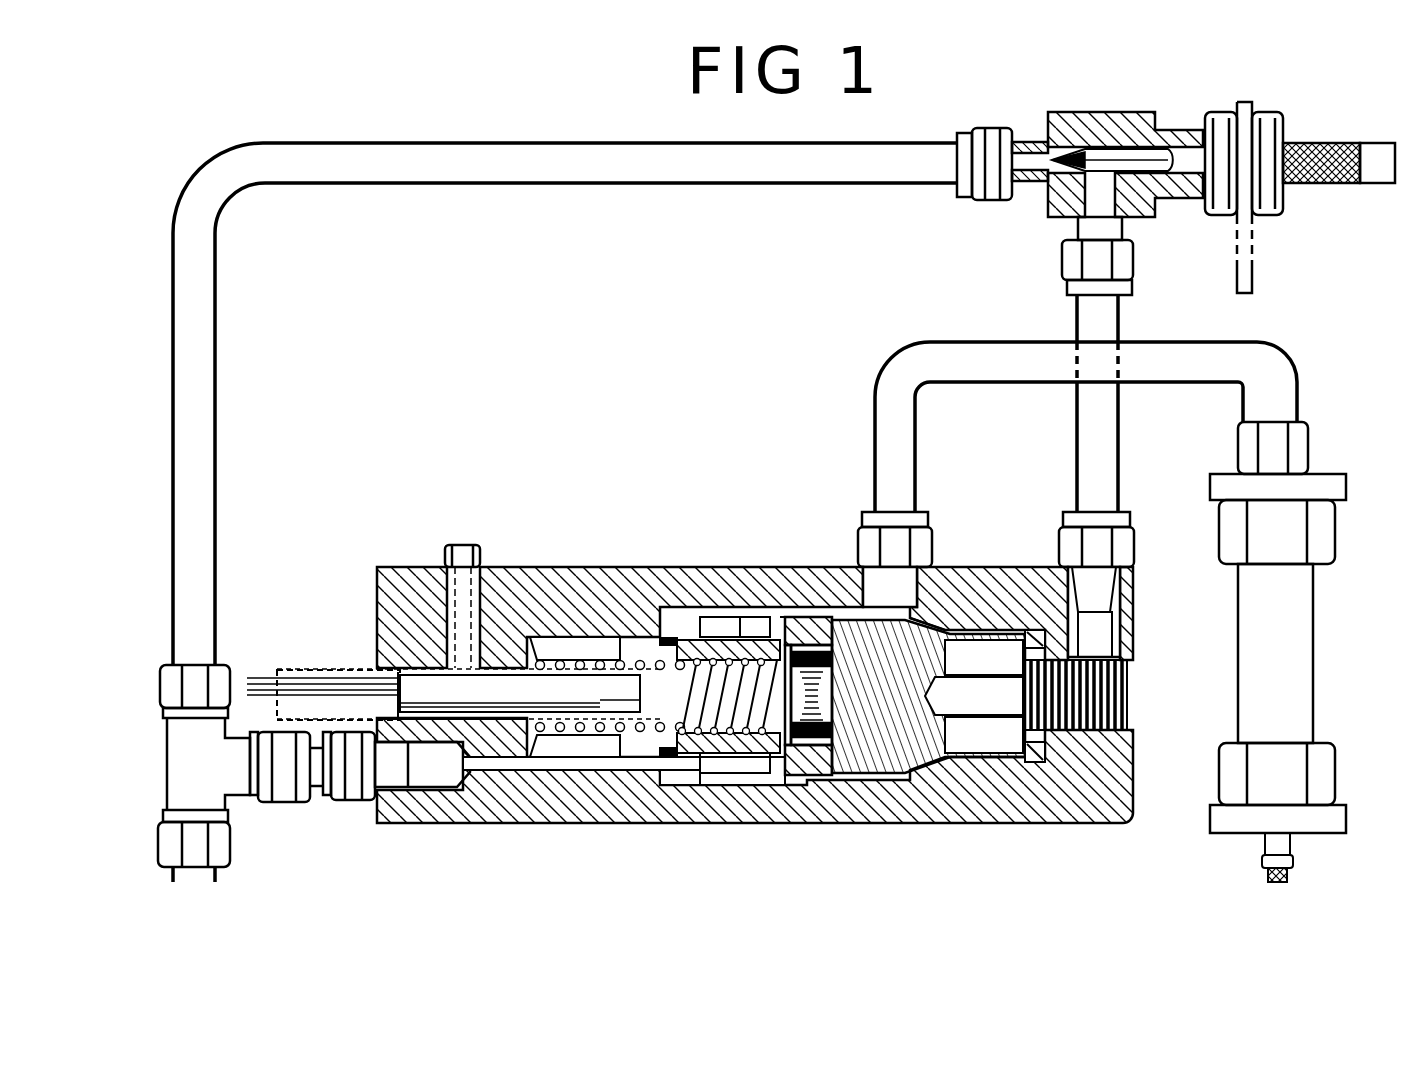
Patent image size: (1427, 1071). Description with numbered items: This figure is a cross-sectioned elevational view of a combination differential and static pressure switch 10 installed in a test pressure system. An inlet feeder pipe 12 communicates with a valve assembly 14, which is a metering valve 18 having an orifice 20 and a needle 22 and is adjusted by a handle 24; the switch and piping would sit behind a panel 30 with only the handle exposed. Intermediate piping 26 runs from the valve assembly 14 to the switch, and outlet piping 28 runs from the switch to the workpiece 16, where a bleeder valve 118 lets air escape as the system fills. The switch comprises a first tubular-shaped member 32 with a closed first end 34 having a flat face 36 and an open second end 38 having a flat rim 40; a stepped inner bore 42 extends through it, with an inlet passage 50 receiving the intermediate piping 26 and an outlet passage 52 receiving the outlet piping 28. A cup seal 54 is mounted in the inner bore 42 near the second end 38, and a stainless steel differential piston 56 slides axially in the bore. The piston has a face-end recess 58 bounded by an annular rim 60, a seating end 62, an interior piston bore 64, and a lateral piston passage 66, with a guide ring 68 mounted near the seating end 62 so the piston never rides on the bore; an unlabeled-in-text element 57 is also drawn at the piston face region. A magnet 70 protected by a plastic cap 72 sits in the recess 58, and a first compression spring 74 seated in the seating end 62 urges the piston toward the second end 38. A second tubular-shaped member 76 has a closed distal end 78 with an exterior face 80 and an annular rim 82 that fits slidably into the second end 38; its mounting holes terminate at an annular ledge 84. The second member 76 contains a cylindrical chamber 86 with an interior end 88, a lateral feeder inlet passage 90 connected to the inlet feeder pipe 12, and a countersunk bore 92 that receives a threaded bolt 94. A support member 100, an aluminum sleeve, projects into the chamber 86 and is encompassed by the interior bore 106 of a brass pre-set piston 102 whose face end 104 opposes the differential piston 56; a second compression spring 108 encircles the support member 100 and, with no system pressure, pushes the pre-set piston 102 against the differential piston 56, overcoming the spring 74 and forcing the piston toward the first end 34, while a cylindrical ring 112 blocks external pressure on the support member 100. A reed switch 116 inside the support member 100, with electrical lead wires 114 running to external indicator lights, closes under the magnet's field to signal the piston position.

The pressure switch 10 is at (566, 424).
The inlet feeder pipe 12 is at (218, 541).
The valve assembly 14 is at (1308, 212).
The workpiece 16 is at (1316, 672).
The metering valve 18 is at (1170, 128).
The orifice 20 is at (1045, 162).
The needle 22 is at (1115, 143).
The handle 24 is at (1286, 120).
The intermediate piping 26 is at (1078, 318).
The outlet piping 28 is at (1300, 388).
The panel 30 is at (1250, 272).
The first tubular-shaped member 32 is at (797, 612).
The first end 34 is at (1156, 628).
The face 36 is at (1132, 732).
The second end 38 is at (707, 612).
The rim 40 is at (682, 600).
The inner bore 42 is at (960, 626).
The inlet passage 50 is at (1096, 584).
The outlet passage 52 is at (895, 559).
The cup seal 54 is at (808, 778).
The differential piston 56 is at (935, 775).
The seal 57 is at (773, 612).
The recess 58 is at (831, 725).
The annular rim 60 is at (764, 787).
The seating end 62 is at (1032, 766).
The piston bore 64 is at (1036, 696).
The lateral piston passage 66 is at (974, 697).
The guide ring 68 is at (1040, 770).
The magnet 70 is at (843, 600).
The plastic cap 72 is at (815, 612).
The first compression spring 74 is at (1130, 747).
The second tubular-shaped member 76 is at (401, 567).
The distal end 78 is at (352, 603).
The exterior face 80 is at (376, 641).
The annular rim 82 is at (735, 786).
The annular ledge 84 is at (662, 772).
The cylindrical chamber 86 is at (585, 741).
The interior end 88 is at (548, 745).
The lateral feeder inlet passage 90 is at (413, 773).
The countersunk bore 92 is at (443, 587).
The threaded bolt 94 is at (467, 543).
The support member 100 is at (326, 723).
The pre-set piston 102 is at (642, 652).
The face end 104 is at (745, 620).
The interior bore 106 is at (668, 786).
The second compression spring 108 is at (562, 638).
The cylindrical ring 112 is at (688, 613).
The electrical lead wires 114 is at (269, 670).
The reed switch 116 is at (592, 660).
The bleeder valve 118 is at (1296, 862).